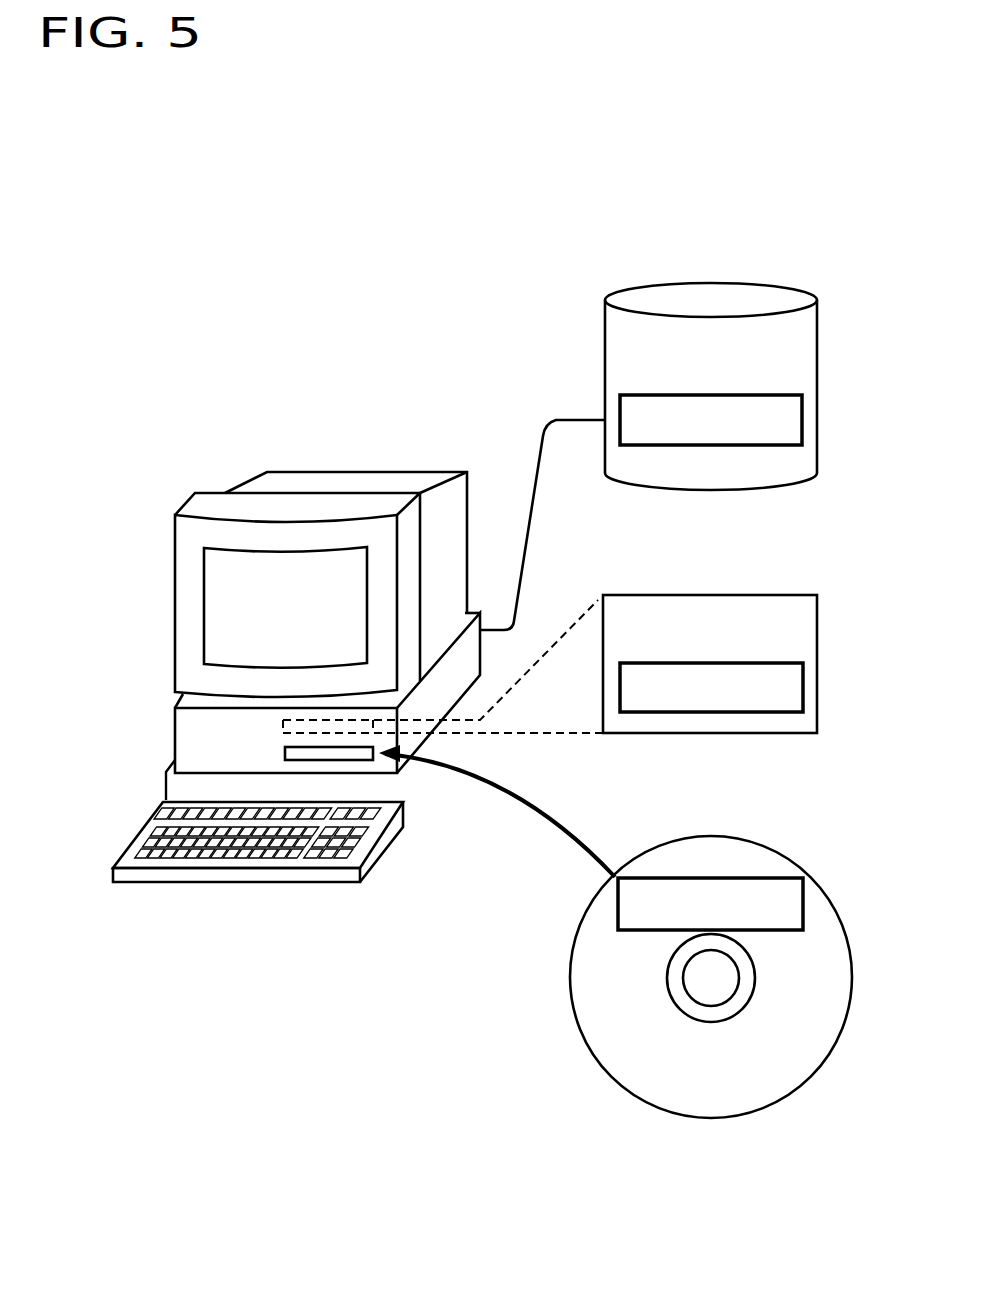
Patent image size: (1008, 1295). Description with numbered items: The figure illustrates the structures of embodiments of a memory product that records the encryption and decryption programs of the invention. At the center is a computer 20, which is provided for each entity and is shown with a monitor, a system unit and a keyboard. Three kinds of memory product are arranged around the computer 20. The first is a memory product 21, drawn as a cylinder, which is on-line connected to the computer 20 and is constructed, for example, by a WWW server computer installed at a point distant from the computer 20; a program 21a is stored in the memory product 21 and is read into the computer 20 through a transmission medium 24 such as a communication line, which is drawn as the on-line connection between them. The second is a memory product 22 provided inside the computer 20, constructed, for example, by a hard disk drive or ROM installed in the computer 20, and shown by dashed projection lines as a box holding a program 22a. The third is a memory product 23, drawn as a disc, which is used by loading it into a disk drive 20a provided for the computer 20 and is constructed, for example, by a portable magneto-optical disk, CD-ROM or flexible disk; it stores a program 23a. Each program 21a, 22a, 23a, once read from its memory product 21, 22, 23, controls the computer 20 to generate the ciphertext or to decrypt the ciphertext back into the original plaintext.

The computer 20 is at (337, 471).
The disk drive 20a is at (377, 764).
The memory product 21 is at (820, 328).
The program 21a is at (657, 396).
The memory product 22 is at (755, 594).
The program 22a is at (632, 663).
The memory product 23 is at (673, 840).
The program 23a is at (745, 878).
The transmission medium 24 is at (533, 502).